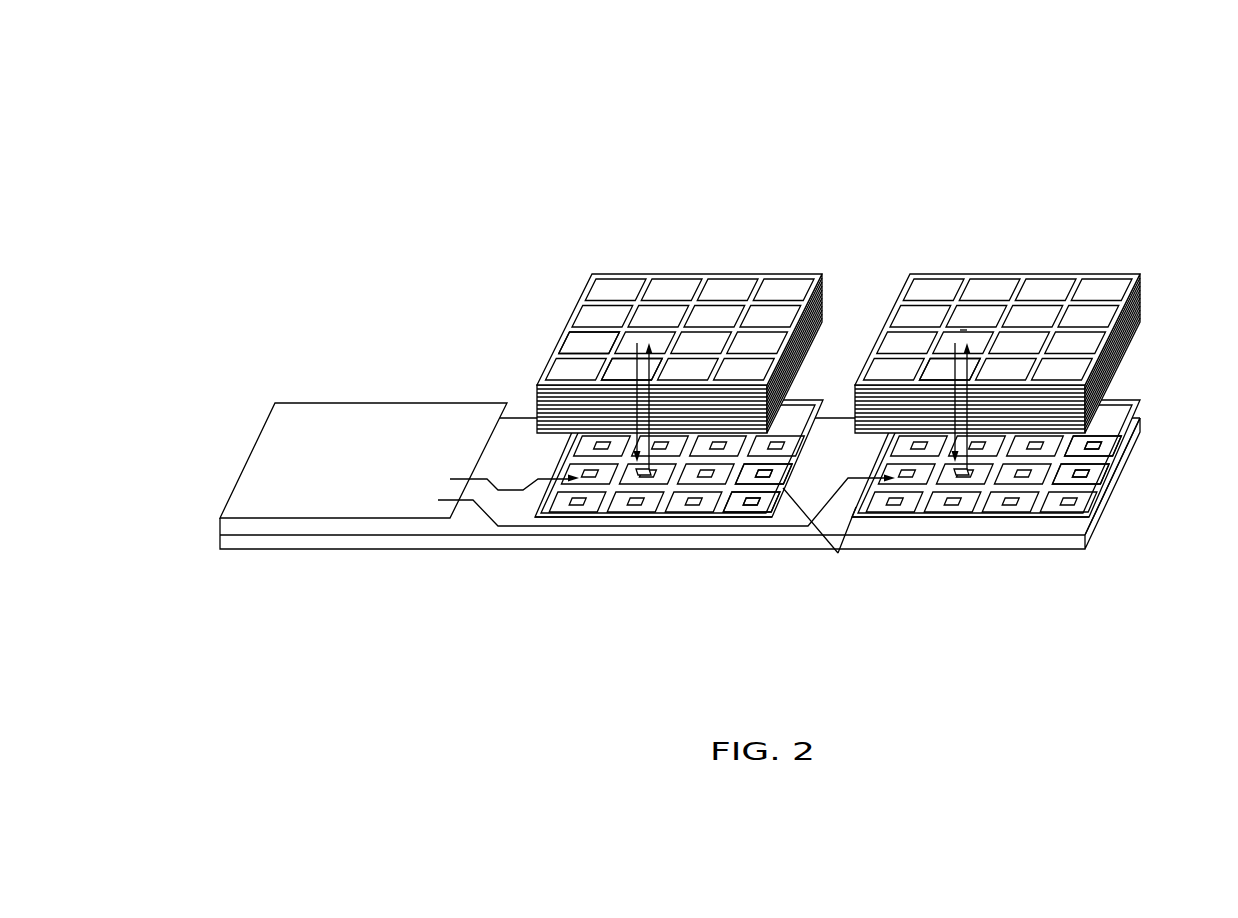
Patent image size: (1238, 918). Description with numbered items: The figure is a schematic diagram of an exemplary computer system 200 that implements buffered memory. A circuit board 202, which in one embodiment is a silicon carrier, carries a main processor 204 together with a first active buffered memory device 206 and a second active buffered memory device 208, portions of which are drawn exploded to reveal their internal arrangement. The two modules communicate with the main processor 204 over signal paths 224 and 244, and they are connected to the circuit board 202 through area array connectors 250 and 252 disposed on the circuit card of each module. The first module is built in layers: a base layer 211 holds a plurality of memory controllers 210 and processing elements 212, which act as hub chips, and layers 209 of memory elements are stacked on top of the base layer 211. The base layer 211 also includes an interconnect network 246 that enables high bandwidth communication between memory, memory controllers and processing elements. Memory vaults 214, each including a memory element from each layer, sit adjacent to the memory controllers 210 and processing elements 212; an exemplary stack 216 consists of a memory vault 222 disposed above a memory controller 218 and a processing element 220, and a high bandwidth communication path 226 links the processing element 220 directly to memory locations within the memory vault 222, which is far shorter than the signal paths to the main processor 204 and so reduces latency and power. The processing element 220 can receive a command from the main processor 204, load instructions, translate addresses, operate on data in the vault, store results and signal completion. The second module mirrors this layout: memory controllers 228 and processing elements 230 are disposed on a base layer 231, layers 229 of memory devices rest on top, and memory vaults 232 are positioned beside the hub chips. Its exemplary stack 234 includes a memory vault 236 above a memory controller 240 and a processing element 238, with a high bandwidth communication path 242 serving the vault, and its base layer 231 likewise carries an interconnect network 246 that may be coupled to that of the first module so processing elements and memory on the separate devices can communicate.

The computer system 200 is at (721, 322).
The circuit board 202 is at (440, 541).
The main processor 204 is at (358, 466).
The active buffered memory device 206 is at (654, 317).
The active buffered memory device 208 is at (983, 316).
The layers 209 is at (532, 392).
The memory controllers 210 is at (700, 473).
The base layer 211 is at (679, 495).
The processing elements 212 is at (773, 475).
The memory vaults 214 is at (793, 313).
The stack 216 is at (608, 348).
The memory controller 218 is at (642, 477).
The processing element 220 is at (648, 477).
The memory vault 222 is at (658, 342).
The signal path 224 is at (500, 490).
The high bandwidth communication path 226 is at (632, 372).
The memory controllers 228 is at (1085, 472).
The layers 229 is at (1148, 282).
The processing elements 230 is at (1015, 505).
The base layer 231 is at (1013, 493).
The memory vaults 232 is at (1092, 287).
The stack 234 is at (965, 322).
The memory vault 236 is at (947, 342).
The processing element 238 is at (947, 477).
The memory controller 240 is at (955, 478).
The high bandwidth communication path 242 is at (950, 372).
The signal path 244 is at (513, 526).
The interconnect network 246 is at (819, 537).
The area array connector 250 is at (553, 518).
The area array connector 252 is at (1057, 515).